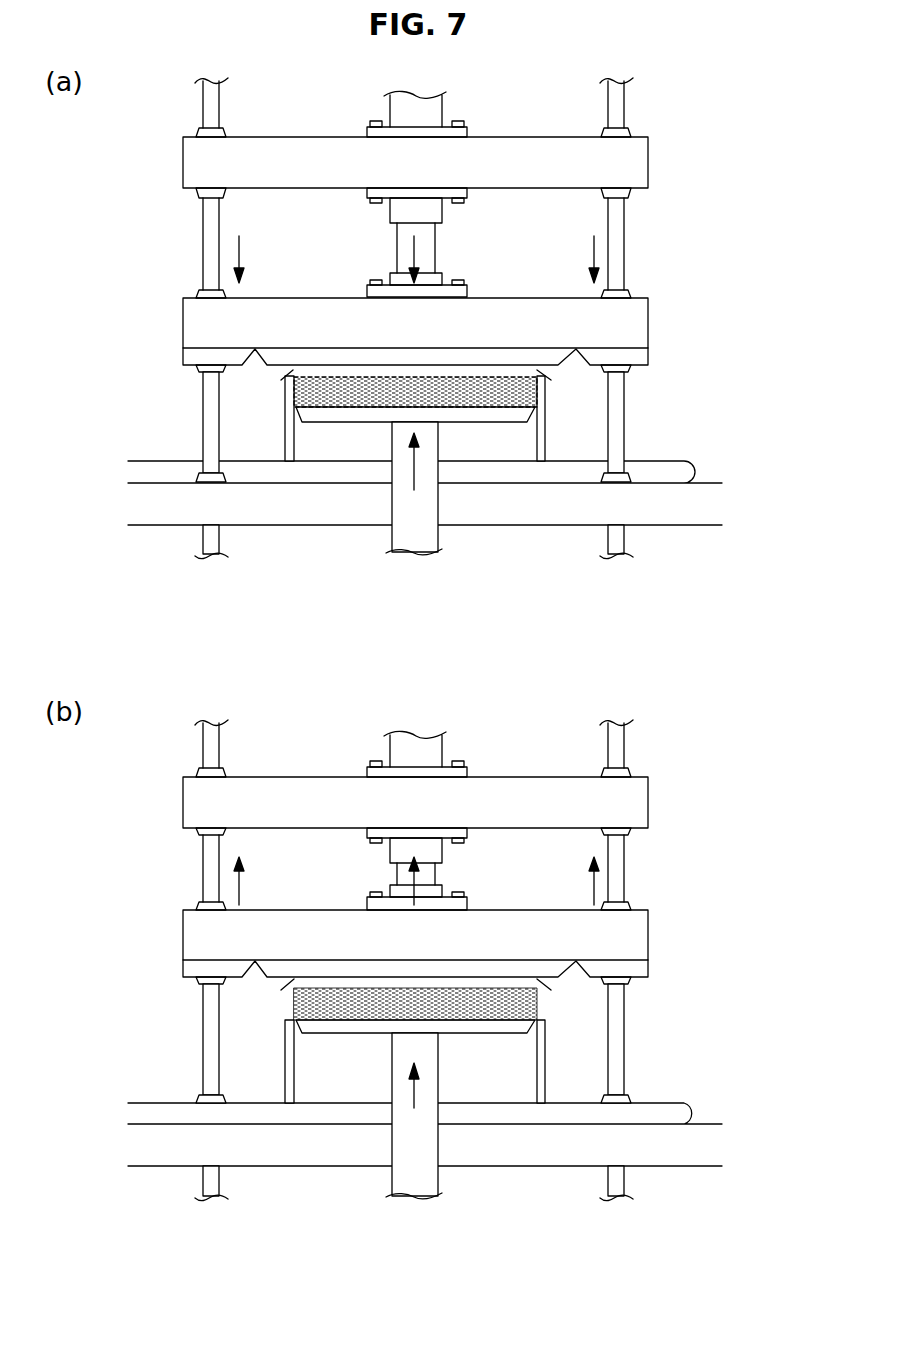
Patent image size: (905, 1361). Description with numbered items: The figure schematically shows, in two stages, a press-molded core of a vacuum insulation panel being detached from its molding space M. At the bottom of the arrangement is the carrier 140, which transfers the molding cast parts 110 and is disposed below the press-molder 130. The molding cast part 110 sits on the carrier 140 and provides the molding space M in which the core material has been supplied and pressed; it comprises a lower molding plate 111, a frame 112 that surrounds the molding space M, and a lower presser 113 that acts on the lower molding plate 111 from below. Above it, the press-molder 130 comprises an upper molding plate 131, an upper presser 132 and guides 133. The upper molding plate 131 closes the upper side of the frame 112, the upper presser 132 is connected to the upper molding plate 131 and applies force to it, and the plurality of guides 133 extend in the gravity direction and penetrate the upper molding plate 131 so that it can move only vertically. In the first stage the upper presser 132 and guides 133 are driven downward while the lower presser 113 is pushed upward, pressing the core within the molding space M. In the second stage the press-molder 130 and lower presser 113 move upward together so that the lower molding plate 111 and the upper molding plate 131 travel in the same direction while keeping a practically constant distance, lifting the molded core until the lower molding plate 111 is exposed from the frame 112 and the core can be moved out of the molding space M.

The molding cast part 110 is at (399, 825).
The lower molding plate 111 is at (357, 412).
The frame 112 is at (542, 452).
The lower presser 113 is at (414, 834).
The press-molder 130 is at (466, 639).
The upper molding plate 131 is at (530, 372).
The upper presser 132 is at (605, 323).
The guide 133 is at (615, 243).
The carrier 140 is at (713, 507).
The molding space M is at (320, 384).